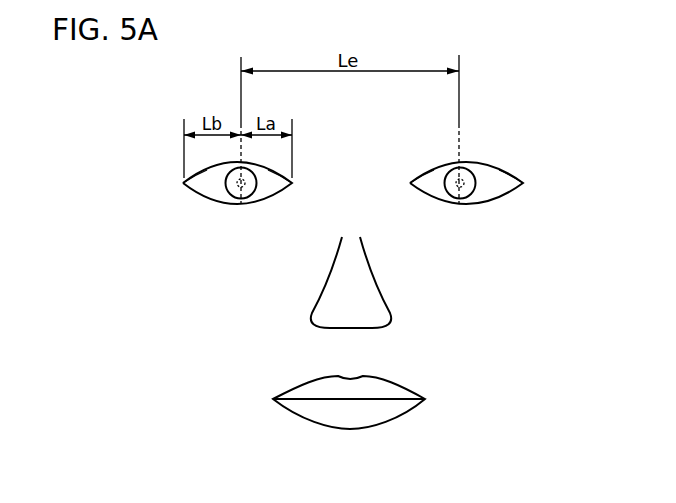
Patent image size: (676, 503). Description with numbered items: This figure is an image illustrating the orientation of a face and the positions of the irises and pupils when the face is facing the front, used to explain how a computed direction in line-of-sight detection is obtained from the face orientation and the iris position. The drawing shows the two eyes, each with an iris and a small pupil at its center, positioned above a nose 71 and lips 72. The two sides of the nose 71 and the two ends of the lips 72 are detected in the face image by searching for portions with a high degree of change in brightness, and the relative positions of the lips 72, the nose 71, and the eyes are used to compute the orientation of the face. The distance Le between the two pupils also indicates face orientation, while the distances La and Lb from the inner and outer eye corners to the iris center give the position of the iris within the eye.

The nose 71 is at (388, 296).
The lips 72 is at (394, 388).